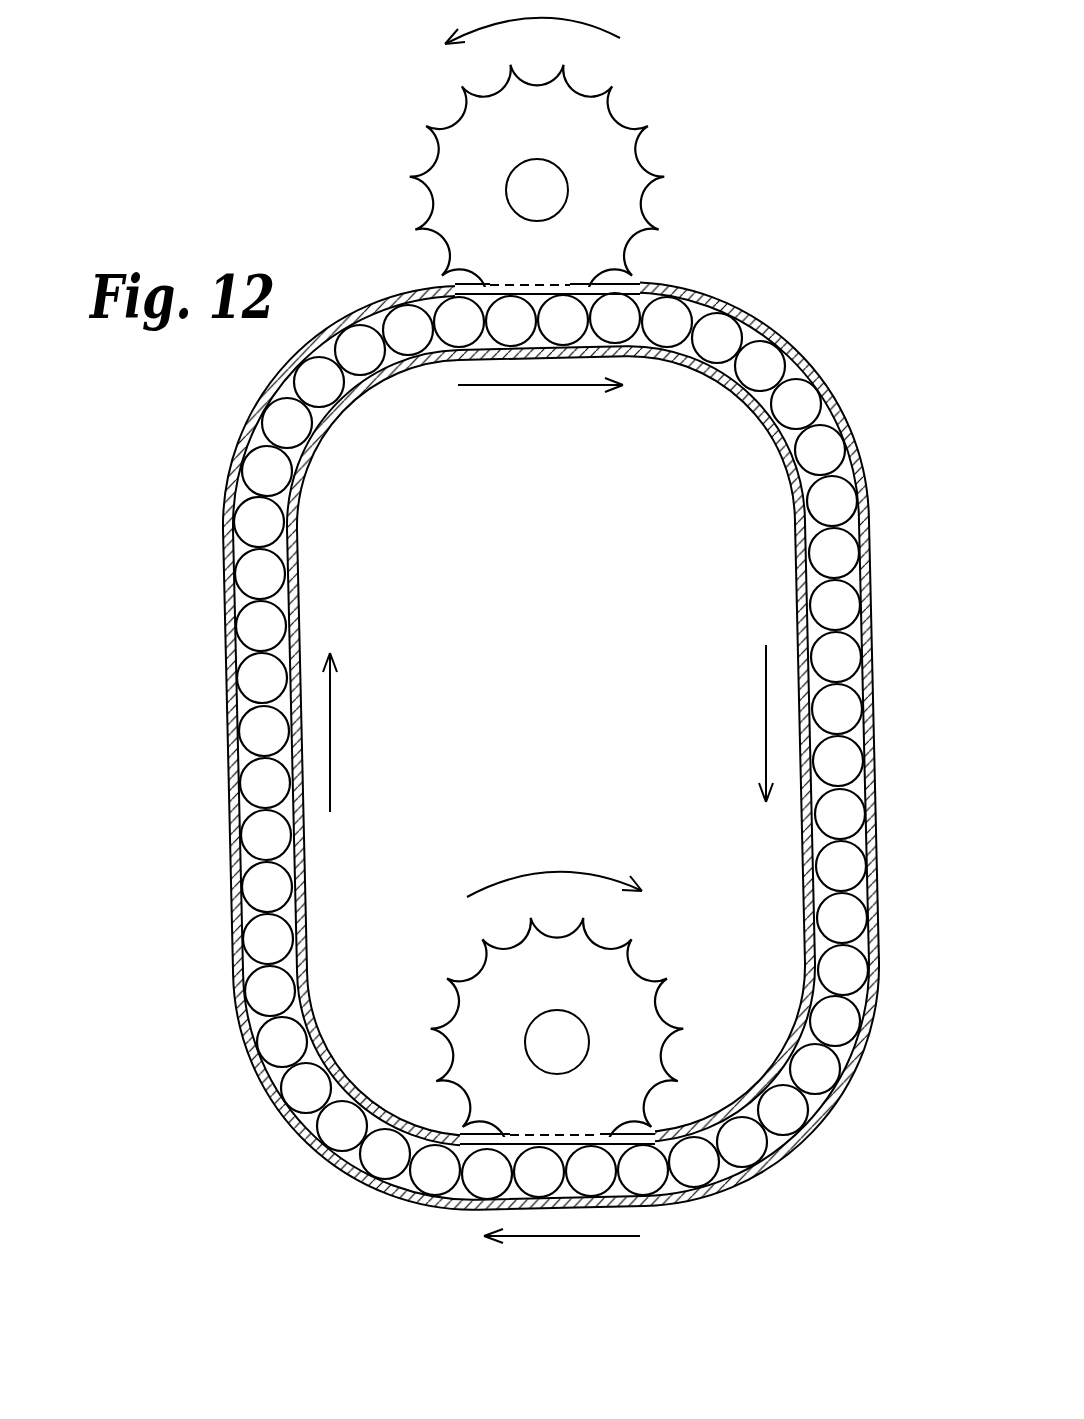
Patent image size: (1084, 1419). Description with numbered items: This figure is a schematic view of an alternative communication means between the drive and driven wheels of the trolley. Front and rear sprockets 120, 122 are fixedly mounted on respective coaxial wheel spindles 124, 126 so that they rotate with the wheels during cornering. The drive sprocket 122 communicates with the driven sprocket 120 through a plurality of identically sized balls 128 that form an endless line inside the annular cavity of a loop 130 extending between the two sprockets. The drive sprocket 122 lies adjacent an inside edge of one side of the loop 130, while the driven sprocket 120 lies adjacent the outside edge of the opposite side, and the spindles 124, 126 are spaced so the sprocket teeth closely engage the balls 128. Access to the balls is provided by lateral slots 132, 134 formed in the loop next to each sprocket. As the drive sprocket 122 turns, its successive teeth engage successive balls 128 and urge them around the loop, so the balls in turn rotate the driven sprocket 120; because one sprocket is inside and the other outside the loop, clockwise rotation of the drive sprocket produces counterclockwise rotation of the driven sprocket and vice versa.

The front sprocket 120 is at (582, 123).
The wheel spindle 124 is at (557, 190).
The lateral slot 132 is at (625, 270).
The loop 130 is at (790, 343).
The balls 128 is at (267, 778).
The rear sprocket 122 is at (642, 1010).
The wheel spindle 126 is at (557, 1042).
The lateral slot 134 is at (575, 1140).